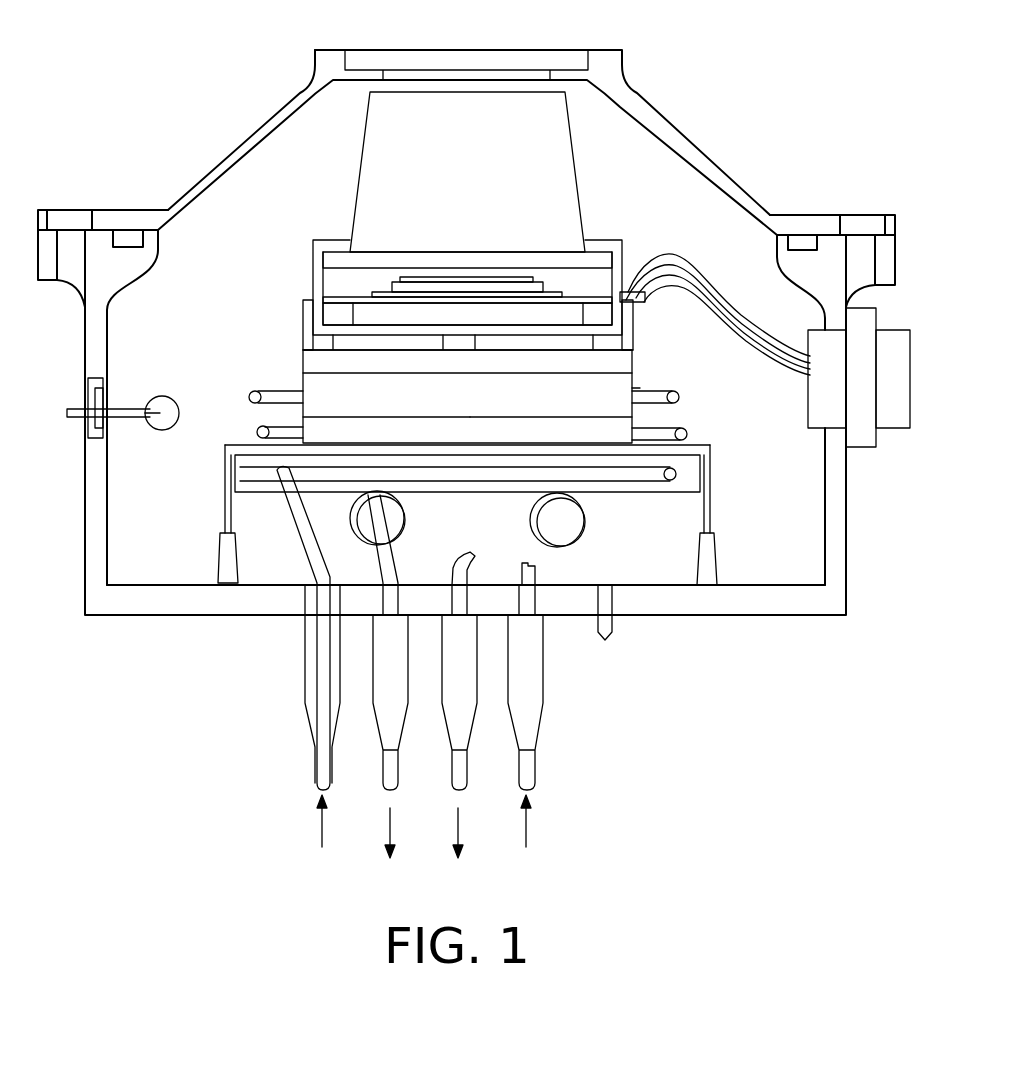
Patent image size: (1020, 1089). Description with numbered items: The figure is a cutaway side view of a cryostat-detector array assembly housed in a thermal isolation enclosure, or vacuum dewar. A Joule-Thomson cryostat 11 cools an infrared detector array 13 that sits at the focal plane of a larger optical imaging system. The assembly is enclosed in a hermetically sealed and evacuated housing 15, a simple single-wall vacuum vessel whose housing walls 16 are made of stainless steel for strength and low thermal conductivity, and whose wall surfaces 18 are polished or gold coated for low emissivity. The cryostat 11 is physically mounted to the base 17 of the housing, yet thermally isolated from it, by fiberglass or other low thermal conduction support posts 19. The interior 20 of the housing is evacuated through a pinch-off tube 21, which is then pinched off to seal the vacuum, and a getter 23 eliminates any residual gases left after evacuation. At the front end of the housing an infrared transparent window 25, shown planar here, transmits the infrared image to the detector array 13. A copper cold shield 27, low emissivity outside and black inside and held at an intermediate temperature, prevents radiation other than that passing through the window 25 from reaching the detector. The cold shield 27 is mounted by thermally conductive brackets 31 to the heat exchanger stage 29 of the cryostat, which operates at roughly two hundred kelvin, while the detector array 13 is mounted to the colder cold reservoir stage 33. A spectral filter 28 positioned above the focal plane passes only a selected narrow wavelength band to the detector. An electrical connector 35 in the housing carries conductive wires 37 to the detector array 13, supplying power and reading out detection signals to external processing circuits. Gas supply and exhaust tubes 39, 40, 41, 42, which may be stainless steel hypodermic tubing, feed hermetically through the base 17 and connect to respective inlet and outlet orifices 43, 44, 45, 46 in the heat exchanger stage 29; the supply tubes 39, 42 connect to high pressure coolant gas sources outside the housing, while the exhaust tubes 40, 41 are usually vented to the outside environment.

The Joule-Thomson cryostat 11 is at (293, 272).
The infrared detector array 13 is at (417, 277).
The housing 15 is at (262, 127).
The housing walls 16 is at (830, 472).
The base 17 is at (563, 617).
The wall surfaces 18 is at (824, 497).
The support posts 19 is at (225, 510).
The interior 20 is at (226, 277).
The pinch-off tube 21 is at (612, 636).
The getter 23 is at (167, 396).
The infrared transparent window 25 is at (456, 58).
The cold shield 27 is at (360, 153).
The spectral filter 28 is at (479, 260).
The heat exchanger stage 29 is at (303, 357).
The thermally conductive brackets 31 is at (602, 242).
The cold reservoir stage 33 is at (368, 297).
The electrical connector 35 is at (893, 428).
The conductive wires 37 is at (690, 270).
The gas supply tube 39 is at (258, 432).
The exhaust tube 40 is at (687, 434).
The exhaust tube 41 is at (249, 393).
The gas supply tube 42 is at (673, 392).
The inlet and outlet orifice 43 is at (303, 417).
The inlet and outlet orifice 44 is at (638, 420).
The inlet and outlet orifice 45 is at (303, 380).
The inlet and outlet orifice 46 is at (636, 388).